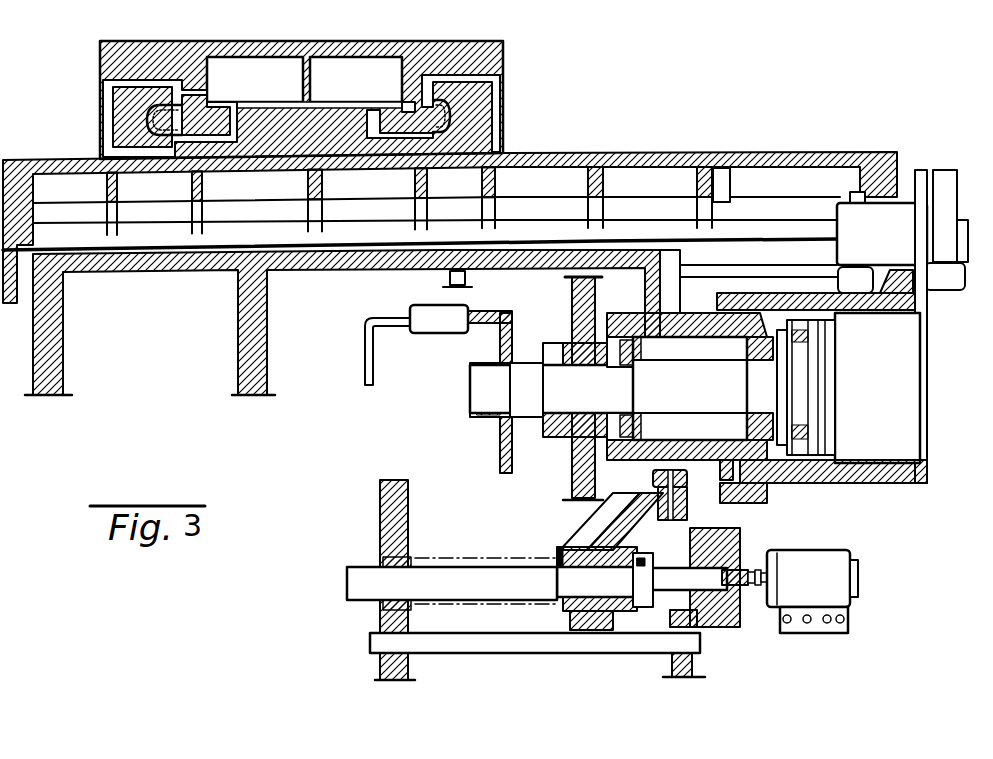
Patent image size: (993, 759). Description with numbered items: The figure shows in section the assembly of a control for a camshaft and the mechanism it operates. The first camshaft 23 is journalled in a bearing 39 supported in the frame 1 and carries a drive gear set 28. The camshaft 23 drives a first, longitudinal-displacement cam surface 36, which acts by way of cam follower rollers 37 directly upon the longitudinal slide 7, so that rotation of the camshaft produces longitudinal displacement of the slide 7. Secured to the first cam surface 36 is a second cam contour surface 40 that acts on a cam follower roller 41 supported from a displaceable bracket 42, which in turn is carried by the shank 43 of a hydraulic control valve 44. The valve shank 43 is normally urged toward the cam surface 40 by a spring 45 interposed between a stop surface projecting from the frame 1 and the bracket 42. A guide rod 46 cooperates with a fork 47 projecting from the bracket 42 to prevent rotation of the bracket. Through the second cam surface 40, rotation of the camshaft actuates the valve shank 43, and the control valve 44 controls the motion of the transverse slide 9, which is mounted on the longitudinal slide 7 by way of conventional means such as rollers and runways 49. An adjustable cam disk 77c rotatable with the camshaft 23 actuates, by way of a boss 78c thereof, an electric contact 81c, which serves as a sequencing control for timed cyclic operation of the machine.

The frame 1 is at (370, 268).
The longitudinal slide 7 is at (781, 152).
The transverse slide 9 is at (110, 55).
The first camshaft 23 is at (652, 387).
The drive gear set 28 is at (572, 300).
The first longitudinal-displacement cam surface 36 is at (900, 482).
The cam follower rollers 37 is at (967, 290).
The bearing 39 is at (690, 426).
The second cam contour surface 40 is at (728, 300).
The cam follower roller 41 is at (655, 478).
The displaceable bracket 42 is at (576, 547).
The valve shank 43 is at (665, 578).
The hydraulic control valve 44 is at (812, 591).
The spring 45 is at (447, 561).
The guide rod 46 is at (485, 640).
The fork 47 is at (595, 622).
The rollers and runways 49 is at (150, 127).
The adjustable cam disk 77c is at (508, 456).
The boss 78c is at (490, 311).
The electric contact 81c is at (416, 345).